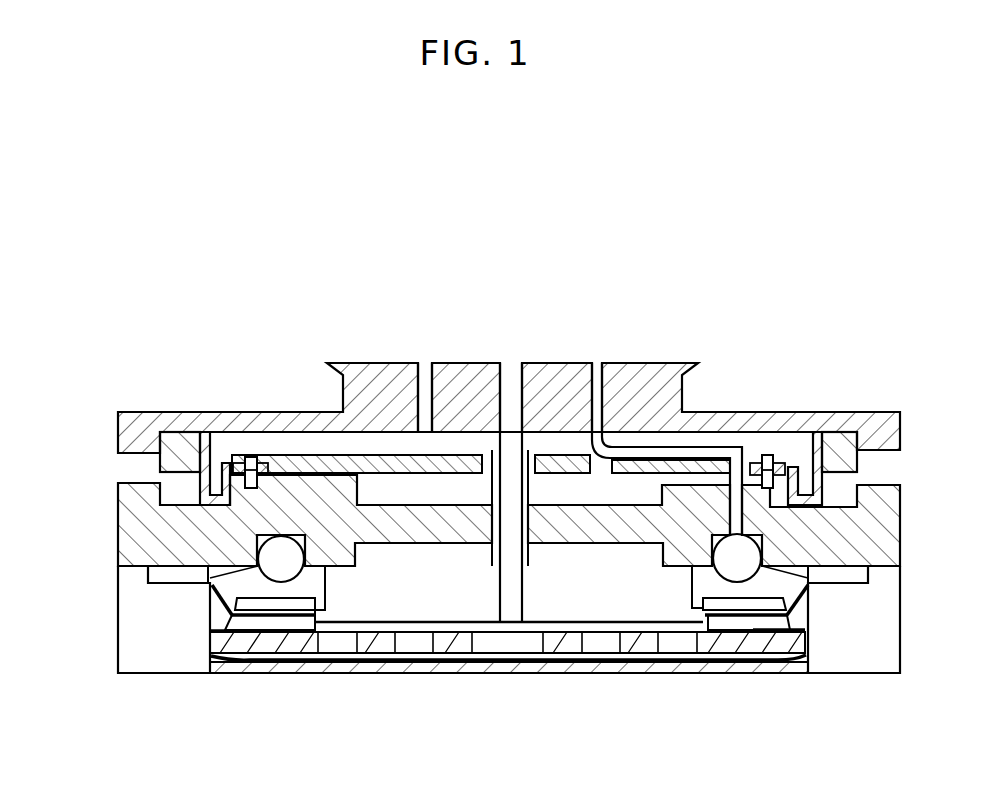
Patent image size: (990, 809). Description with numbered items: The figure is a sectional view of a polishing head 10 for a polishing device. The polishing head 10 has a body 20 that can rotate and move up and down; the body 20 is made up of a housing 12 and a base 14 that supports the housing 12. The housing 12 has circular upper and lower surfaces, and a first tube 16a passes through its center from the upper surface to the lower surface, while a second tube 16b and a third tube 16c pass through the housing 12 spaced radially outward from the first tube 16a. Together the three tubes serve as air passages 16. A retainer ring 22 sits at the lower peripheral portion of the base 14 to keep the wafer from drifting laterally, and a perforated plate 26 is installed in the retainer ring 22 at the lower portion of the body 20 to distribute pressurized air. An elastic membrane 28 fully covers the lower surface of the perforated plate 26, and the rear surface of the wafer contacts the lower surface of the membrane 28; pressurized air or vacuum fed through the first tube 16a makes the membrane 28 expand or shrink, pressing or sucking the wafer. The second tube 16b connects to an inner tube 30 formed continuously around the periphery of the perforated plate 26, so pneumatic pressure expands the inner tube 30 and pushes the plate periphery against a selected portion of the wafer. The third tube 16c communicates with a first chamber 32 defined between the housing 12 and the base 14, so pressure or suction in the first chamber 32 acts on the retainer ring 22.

The polishing head 10 is at (112, 263).
The housing 12 is at (690, 380).
The base 14 is at (880, 487).
The air passages 16 is at (425, 270).
The first tube 16a is at (508, 362).
The second tube 16b is at (595, 362).
The third tube 16c is at (419, 362).
The body 20 is at (837, 333).
The retainer ring 22 is at (900, 622).
The perforated plate 26 is at (641, 636).
The membrane 28 is at (752, 663).
The inner tube 30 is at (745, 572).
The first chamber 32 is at (249, 448).